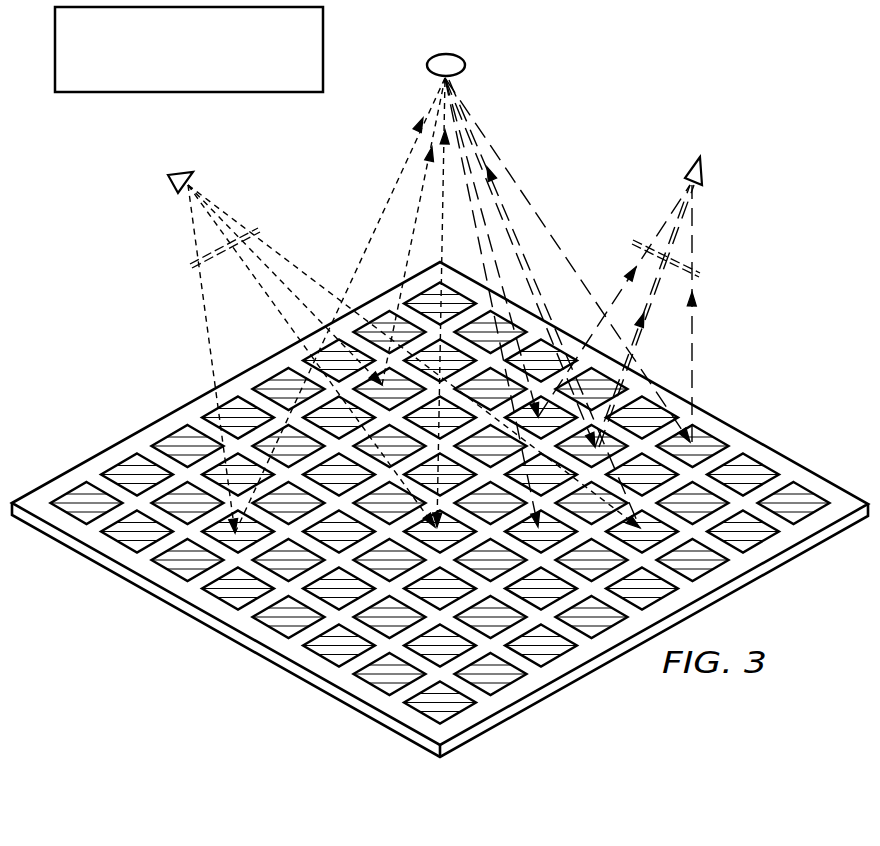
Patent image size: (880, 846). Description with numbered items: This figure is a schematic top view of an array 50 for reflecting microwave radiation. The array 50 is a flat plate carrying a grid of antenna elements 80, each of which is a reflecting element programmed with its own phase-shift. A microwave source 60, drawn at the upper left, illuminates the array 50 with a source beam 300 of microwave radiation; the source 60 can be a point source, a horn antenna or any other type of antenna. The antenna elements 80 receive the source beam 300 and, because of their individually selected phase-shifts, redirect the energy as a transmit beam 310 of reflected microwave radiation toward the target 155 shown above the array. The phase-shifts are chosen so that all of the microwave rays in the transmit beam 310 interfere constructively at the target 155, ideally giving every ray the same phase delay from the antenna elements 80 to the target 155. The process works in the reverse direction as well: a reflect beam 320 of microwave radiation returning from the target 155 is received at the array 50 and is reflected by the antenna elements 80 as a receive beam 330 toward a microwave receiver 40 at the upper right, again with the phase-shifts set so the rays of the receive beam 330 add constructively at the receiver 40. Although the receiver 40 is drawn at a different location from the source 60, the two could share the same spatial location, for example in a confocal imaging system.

The microwave receiver 40 is at (704, 166).
The array 50 is at (262, 659).
The microwave source 60 is at (165, 179).
The antenna elements 80 is at (466, 718).
The target 155 is at (466, 64).
The source beam 300 is at (192, 263).
The transmit beam 310 is at (292, 295).
The reflect beam 320 is at (288, 30).
The receive beam 330 is at (704, 274).